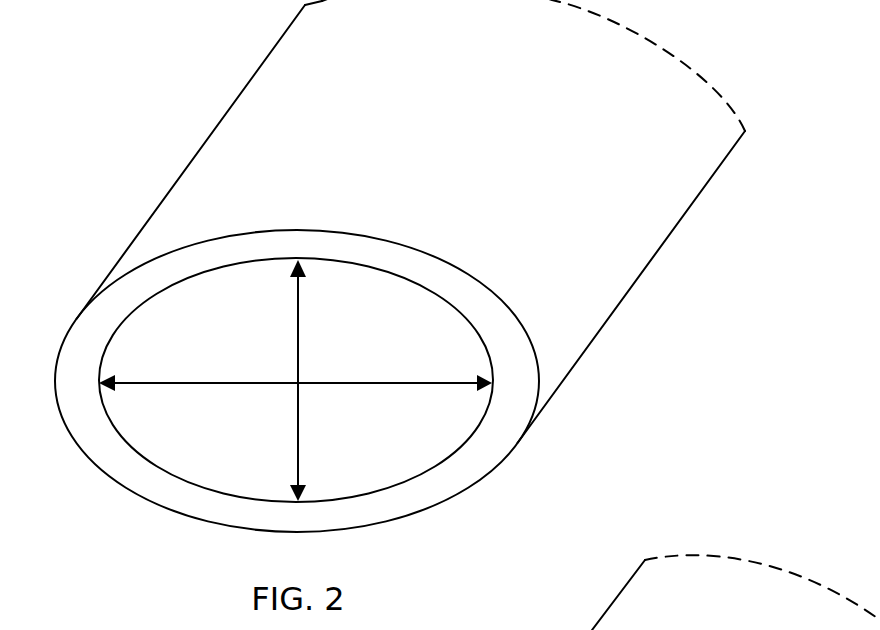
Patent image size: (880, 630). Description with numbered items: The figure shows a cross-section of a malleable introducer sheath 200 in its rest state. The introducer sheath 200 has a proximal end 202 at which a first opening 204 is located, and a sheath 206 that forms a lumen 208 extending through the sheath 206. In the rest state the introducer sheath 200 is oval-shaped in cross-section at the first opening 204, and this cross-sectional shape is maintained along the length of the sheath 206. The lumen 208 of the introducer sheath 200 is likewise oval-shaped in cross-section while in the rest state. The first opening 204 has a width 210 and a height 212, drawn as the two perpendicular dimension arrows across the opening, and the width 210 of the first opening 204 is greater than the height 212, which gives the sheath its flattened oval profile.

The malleable introducer sheath 200 is at (119, 114).
The proximal end 202 is at (137, 492).
The first opening 204 is at (458, 435).
The sheath 206 is at (260, 92).
The lumen 208 is at (357, 428).
The width 210 is at (243, 387).
The height 212 is at (300, 348).